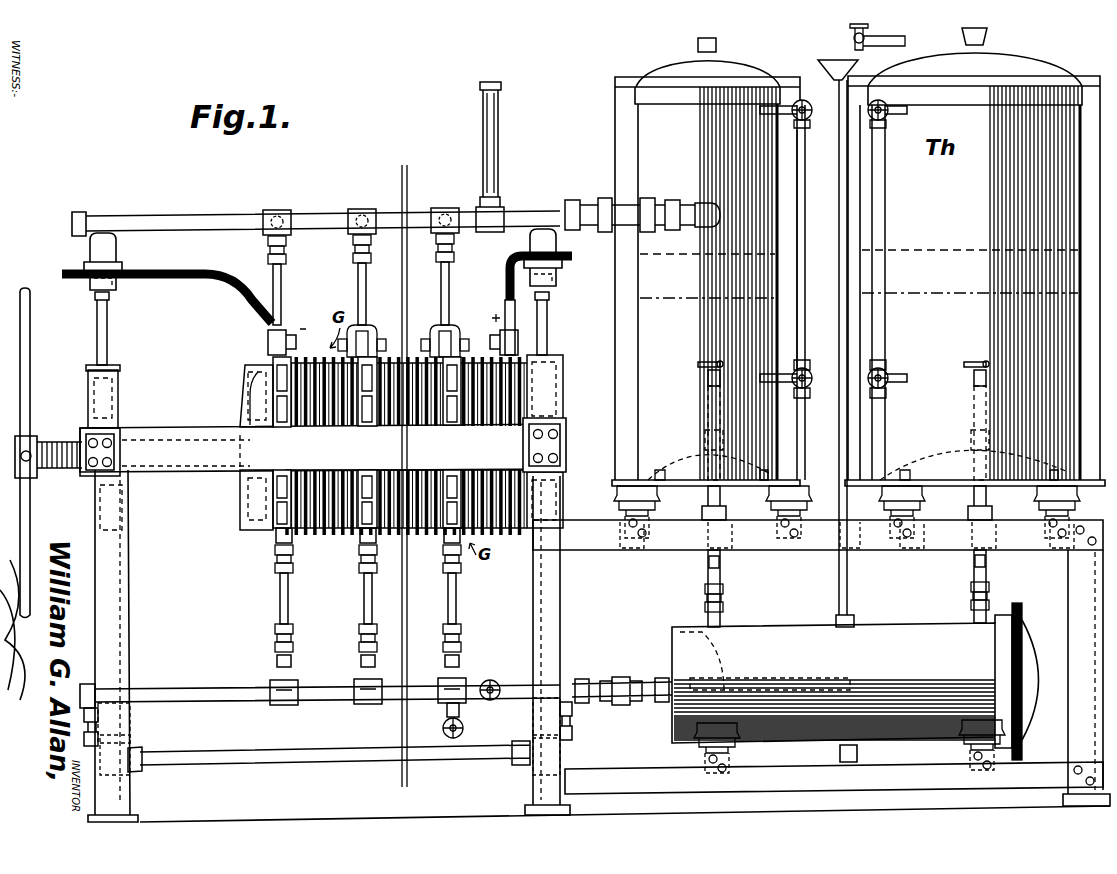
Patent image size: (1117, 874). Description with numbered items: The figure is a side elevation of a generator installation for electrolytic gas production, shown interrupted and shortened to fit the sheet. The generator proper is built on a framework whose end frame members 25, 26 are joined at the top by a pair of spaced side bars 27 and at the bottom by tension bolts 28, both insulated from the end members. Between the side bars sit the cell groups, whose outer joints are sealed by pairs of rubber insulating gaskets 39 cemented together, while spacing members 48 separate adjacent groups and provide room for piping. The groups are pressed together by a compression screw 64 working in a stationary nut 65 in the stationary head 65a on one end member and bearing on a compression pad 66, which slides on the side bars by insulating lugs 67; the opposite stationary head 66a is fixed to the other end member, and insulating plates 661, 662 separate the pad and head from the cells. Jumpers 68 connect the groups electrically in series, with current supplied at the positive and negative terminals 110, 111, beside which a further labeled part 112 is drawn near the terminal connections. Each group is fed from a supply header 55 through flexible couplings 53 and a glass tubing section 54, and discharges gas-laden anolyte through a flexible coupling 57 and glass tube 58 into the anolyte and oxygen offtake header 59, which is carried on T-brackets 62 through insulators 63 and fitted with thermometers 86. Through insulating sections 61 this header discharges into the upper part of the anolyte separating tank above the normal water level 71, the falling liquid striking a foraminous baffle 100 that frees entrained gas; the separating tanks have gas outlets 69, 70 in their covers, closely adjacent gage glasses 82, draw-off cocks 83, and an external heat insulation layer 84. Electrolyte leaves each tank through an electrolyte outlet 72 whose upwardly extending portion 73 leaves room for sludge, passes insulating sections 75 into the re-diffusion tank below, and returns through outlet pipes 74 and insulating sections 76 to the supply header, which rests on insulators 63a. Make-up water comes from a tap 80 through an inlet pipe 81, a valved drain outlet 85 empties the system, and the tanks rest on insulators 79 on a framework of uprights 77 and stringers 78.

The end frame member 25 is at (125, 646).
The end frame member 26 is at (552, 615).
The side bars 27 is at (322, 448).
The tension bolts 28 is at (252, 768).
The annular insulating gaskets 39 is at (335, 530).
The spacing members 48 is at (398, 535).
The flexible couplings 53 is at (278, 560).
The glass tubing section 54 is at (288, 607).
The supply header 55 is at (215, 690).
The flexible coupling 57 is at (268, 255).
The glass tube 58 is at (283, 298).
The anolyte and oxygen offtake header 59 is at (300, 216).
The insulating sections 61 is at (612, 204).
The T-brackets 62 is at (103, 345).
The insulators 63 is at (90, 250).
The insulators 63a is at (130, 730).
The compression screw 64 is at (40, 448).
The stationary nut 65 is at (128, 438).
The stationary head 65a is at (108, 390).
The compression pad 66 is at (258, 527).
The stationary head 66a is at (548, 378).
The lugs 67 is at (247, 424).
The jumpers 68 is at (380, 332).
The gas outlet 69 is at (697, 45).
The gas outlet 70 is at (990, 32).
The normal water level 71 is at (690, 297).
The electrolyte outlet 72 is at (708, 500).
The upwardly extending outlet portion 73 is at (708, 415).
The outlet pipes 74 is at (778, 690).
The insulating sections 75 is at (722, 564).
The insulating sections 76 is at (622, 682).
The uprights 77 is at (1080, 580).
The stringers 78 is at (878, 552).
The insulators 79 is at (795, 505).
The tap 80 is at (838, 42).
The inlet pipe 81 is at (835, 255).
The gage glasses 82 is at (800, 192).
The draw-off cocks 83 is at (708, 386).
The heat insulation layer 84 is at (615, 370).
The valved drain outlet 85 is at (462, 726).
The thermometers 86 is at (492, 152).
The foraminous baffle member 100 is at (700, 260).
The positive terminal 110 is at (505, 318).
The negative terminal 111 is at (290, 322).
The clamp 112 is at (288, 337).
The insulating plate 661 is at (275, 548).
The insulating plate 662 is at (530, 540).